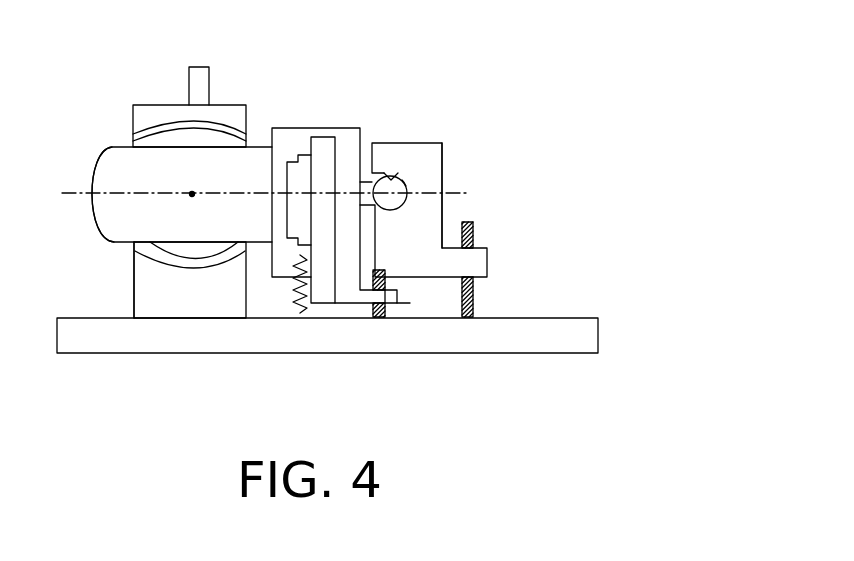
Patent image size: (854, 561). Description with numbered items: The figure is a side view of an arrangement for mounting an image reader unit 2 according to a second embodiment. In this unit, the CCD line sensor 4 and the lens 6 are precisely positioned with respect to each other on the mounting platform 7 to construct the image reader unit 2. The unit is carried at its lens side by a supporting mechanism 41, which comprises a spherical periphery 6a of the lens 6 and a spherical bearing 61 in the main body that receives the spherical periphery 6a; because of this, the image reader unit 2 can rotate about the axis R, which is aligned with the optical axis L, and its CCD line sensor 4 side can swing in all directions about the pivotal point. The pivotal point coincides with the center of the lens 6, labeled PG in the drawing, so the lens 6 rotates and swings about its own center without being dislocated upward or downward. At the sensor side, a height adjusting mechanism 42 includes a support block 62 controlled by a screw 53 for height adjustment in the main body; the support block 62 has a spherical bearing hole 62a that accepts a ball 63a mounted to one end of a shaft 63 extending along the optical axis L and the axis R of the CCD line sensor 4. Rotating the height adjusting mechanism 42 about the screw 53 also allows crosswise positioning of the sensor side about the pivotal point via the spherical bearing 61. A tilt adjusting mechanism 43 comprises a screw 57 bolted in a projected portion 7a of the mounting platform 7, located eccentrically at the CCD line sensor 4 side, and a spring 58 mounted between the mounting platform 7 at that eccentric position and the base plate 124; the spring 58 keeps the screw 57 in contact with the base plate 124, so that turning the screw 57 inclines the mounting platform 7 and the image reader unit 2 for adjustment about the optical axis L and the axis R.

The image reader unit 2 is at (261, 66).
The CCD line sensor 4 is at (298, 187).
The lens 6 is at (115, 238).
The spherical periphery 6a is at (170, 128).
The mounting platform 7 is at (293, 128).
The projected portion 7a is at (388, 298).
The supporting mechanism 41 is at (117, 302).
The height adjusting mechanism 42 is at (456, 180).
The tilt adjusting mechanism 43 is at (422, 318).
The screw 53 is at (474, 230).
The screw 57 is at (375, 305).
The spring 58 is at (293, 285).
The spherical bearing 61 is at (193, 292).
The support block 62 is at (433, 167).
The spherical bearing hole 62a is at (394, 177).
The shaft 63 is at (388, 177).
The ball 63a is at (406, 184).
The base plate 124 is at (307, 340).
The optical axis L is at (77, 194).
The pinch gap point PG is at (192, 194).
The axis R is at (121, 195).